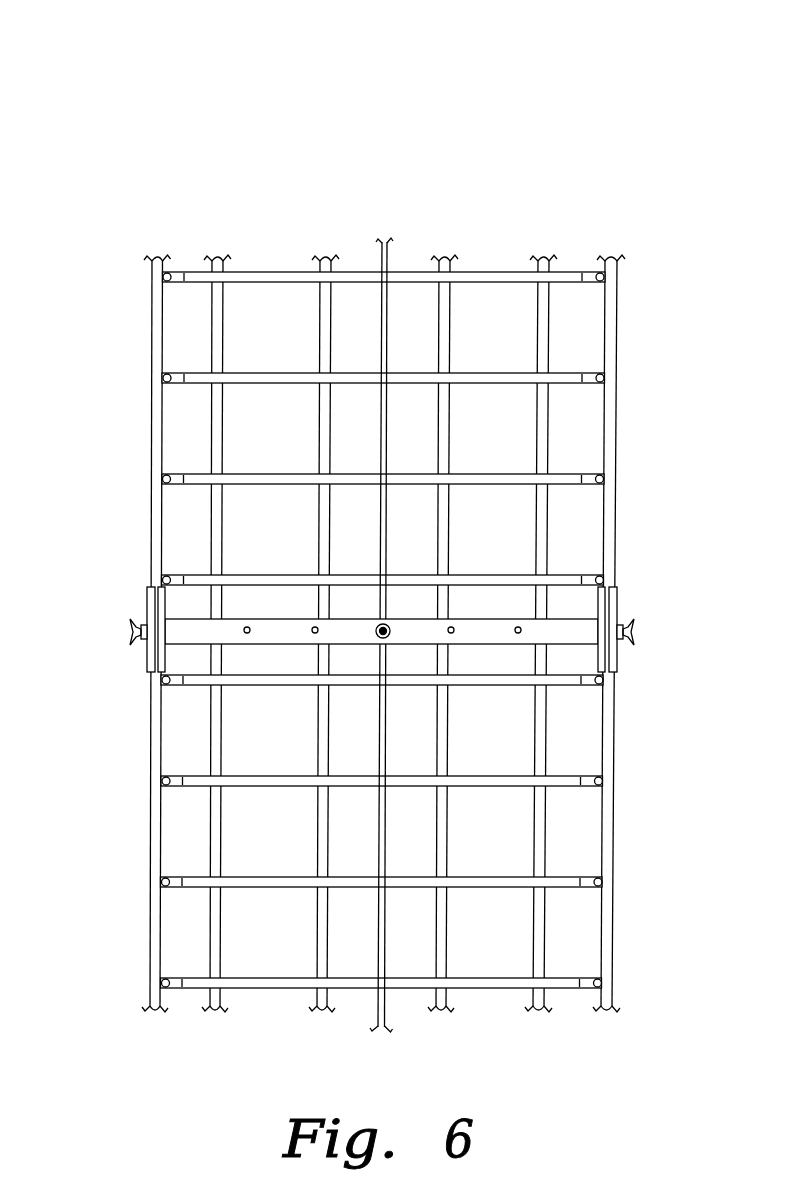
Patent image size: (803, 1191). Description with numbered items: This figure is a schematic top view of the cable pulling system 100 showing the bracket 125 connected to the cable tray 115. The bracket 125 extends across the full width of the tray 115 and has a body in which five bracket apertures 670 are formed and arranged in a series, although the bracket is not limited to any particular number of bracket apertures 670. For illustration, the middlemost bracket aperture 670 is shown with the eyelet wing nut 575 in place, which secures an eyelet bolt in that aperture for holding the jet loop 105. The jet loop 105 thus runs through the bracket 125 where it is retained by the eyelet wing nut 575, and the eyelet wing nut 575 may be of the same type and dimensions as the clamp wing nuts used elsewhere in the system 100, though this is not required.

The plant support system 100 is at (80, 113).
The jet loop 105 is at (388, 258).
The cable tray 115 is at (152, 419).
The bracket 125 is at (185, 644).
The bracket apertures 670 is at (315, 627).
The eyelet wing nut 575 is at (386, 637).